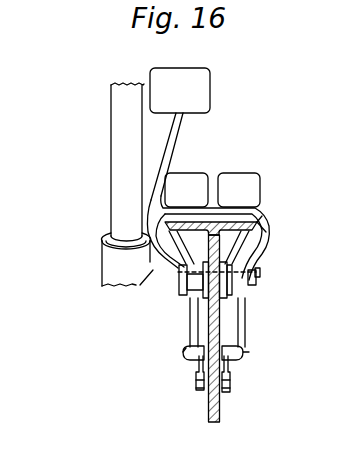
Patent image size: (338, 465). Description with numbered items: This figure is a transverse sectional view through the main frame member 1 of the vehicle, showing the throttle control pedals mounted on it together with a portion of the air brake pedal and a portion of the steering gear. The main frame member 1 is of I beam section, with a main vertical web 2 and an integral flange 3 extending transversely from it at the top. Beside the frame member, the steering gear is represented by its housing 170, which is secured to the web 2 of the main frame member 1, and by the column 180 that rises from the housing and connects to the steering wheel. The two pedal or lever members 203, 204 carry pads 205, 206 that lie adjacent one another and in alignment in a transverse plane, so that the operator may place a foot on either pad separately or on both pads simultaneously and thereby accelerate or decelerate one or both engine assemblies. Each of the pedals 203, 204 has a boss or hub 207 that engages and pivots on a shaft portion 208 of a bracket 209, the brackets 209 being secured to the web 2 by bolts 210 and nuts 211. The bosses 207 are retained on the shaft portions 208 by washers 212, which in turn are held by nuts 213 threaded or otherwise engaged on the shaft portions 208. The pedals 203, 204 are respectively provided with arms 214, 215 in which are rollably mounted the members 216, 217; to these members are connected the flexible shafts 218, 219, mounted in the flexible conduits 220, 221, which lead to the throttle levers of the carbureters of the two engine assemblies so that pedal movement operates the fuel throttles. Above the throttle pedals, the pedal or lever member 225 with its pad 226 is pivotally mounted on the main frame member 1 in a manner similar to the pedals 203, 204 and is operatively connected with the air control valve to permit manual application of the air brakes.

The main frame member 1 is at (263, 222).
The main vertical web 2 is at (220, 420).
The integral flange 3 is at (263, 210).
The housing 170 is at (102, 255).
The column 180 is at (111, 155).
The pedal or lever member 203 is at (162, 278).
The pedal or lever member 204 is at (256, 244).
The pad 205 is at (189, 170).
The pad 206 is at (263, 190).
The boss or hub 207 is at (242, 301).
The shaft portion 208 is at (241, 288).
The bracket 209 is at (242, 326).
The bolt 210 is at (265, 218).
The nut 211 is at (217, 205).
The washer 212 is at (246, 268).
The nut 213 is at (252, 279).
The arm 214 is at (183, 352).
The arm 215 is at (238, 340).
The rollably mounted member 216 is at (193, 375).
The rollably mounted member 217 is at (236, 358).
The flexible shaft 218 is at (198, 378).
The flexible shaft 219 is at (232, 374).
The flexible conduit 220 is at (198, 391).
The flexible conduit 221 is at (231, 389).
The pedal or lever member 225 is at (184, 125).
The pad 226 is at (211, 88).